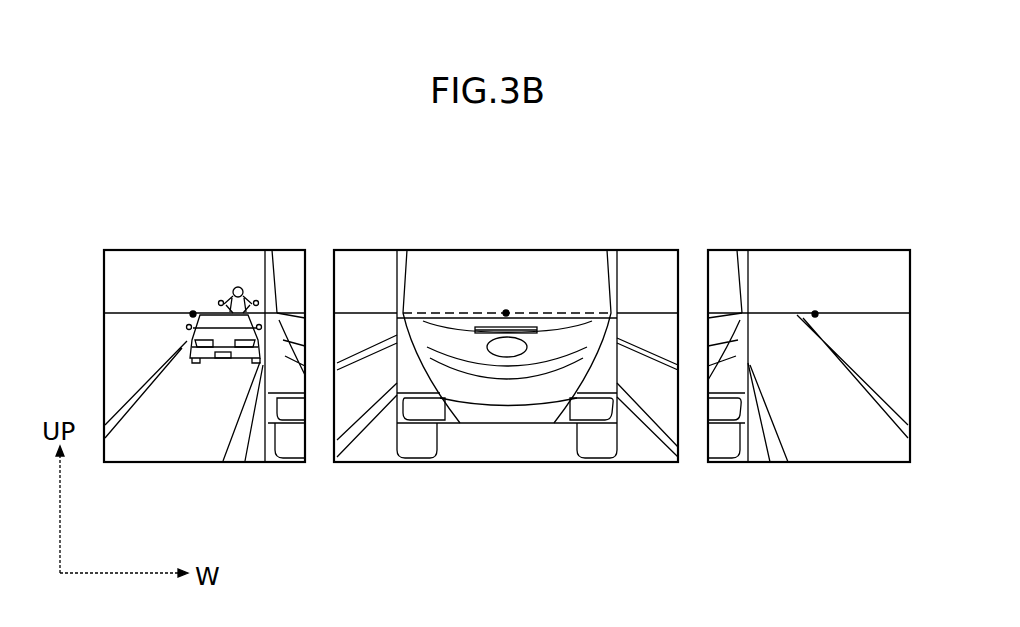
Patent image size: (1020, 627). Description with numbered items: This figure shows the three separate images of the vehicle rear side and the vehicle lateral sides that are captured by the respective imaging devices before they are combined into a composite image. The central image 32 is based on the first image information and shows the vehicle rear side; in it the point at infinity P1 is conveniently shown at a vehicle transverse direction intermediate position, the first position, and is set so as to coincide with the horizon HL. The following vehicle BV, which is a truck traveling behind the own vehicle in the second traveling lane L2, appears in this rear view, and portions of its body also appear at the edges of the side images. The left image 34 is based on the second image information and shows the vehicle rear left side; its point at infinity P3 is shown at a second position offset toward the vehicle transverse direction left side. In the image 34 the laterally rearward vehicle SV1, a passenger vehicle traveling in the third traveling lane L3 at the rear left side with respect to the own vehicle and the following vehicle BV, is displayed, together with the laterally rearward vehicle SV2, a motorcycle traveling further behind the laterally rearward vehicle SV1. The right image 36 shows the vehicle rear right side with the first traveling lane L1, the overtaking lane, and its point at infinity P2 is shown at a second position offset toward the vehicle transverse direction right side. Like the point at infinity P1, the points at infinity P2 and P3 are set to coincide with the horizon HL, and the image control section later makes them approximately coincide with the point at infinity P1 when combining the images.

The image 32 is at (641, 248).
The image 34 is at (124, 248).
The image 36 is at (869, 248).
The following vehicle BV is at (260, 276).
The horizon HL is at (853, 312).
The point at infinity P1 is at (506, 311).
The point at infinity P2 is at (815, 312).
The point at infinity P3 is at (193, 312).
The laterally rearward vehicle SV1 is at (184, 343).
The laterally rearward vehicle SV2 is at (228, 287).
The first traveling lane L1 is at (828, 388).
The second traveling lane L2 is at (507, 398).
The third traveling lane L3 is at (184, 401).